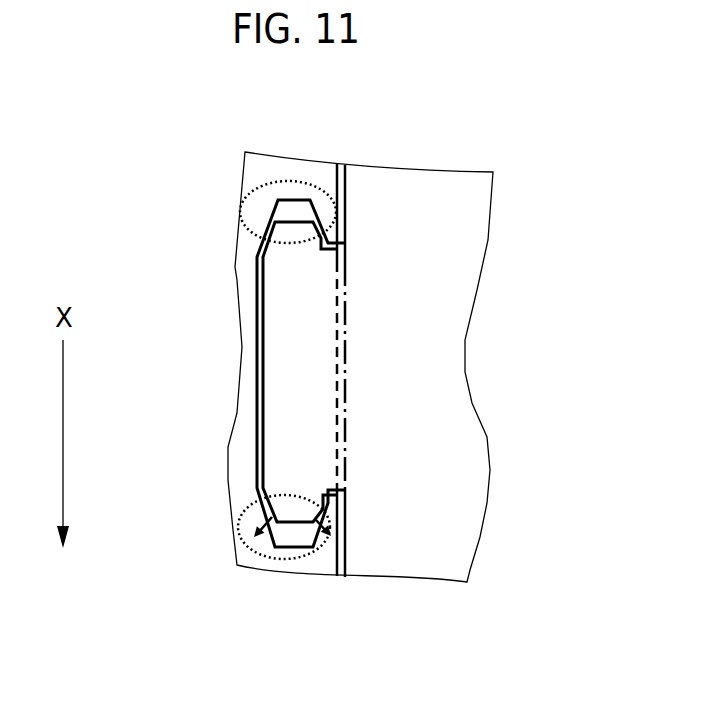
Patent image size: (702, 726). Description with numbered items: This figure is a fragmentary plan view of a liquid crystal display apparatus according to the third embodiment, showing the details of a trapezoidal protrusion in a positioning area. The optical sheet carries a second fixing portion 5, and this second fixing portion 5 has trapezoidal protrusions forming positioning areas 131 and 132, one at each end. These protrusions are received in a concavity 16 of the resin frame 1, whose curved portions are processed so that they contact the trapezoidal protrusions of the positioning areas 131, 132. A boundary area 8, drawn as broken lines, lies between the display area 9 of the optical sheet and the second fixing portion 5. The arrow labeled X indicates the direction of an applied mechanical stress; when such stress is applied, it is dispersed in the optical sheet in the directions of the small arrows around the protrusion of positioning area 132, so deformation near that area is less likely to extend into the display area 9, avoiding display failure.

The resin frame 1 is at (359, 396).
The second fixing portion 5 is at (246, 373).
The boundary area 8 is at (345, 388).
The display area 9 is at (438, 220).
The concavity 16 is at (257, 290).
The positioning area 131 is at (283, 245).
The positioning area 132 is at (305, 496).